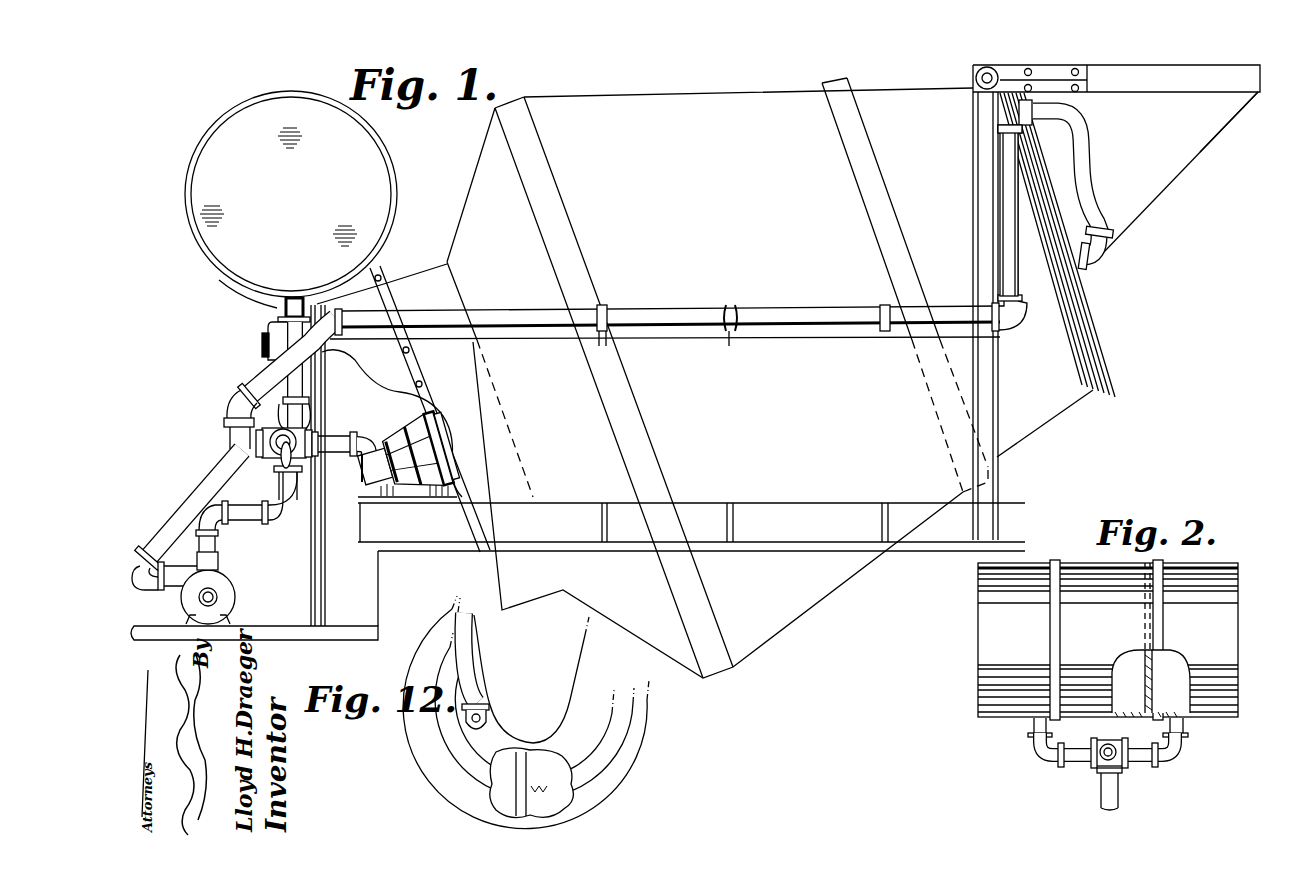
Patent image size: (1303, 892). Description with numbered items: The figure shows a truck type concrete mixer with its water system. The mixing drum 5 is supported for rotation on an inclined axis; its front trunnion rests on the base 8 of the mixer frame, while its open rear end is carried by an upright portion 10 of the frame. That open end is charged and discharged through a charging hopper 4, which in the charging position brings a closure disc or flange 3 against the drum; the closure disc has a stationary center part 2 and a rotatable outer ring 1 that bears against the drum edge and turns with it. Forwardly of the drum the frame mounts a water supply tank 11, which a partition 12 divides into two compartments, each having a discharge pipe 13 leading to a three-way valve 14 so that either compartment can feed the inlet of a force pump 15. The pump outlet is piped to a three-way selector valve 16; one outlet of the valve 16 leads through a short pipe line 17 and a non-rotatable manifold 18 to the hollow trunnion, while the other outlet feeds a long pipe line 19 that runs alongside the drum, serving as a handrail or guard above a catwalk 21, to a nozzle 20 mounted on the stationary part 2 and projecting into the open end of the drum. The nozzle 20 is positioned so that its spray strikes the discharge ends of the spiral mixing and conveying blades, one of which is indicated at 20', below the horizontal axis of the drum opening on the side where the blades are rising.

In FIG. 1, the rotatable outer ring 1 is at (1112, 378).
In FIG. 12, the rotatable outer ring 1 is at (614, 770).
In FIG. 1, the stationary center part 2 is at (1098, 310).
In FIG. 12, the stationary center part 2 is at (612, 748).
In FIG. 1, the closure disc or flange 3 is at (1103, 340).
In FIG. 12, the closure disc or flange 3 is at (628, 715).
In FIG. 1, the charging hopper 4 is at (1178, 170).
In FIG. 12, the charging hopper 4 is at (578, 662).
In FIG. 1, the mixing drum 5 is at (702, 94).
In FIG. 1, the base 8 is at (398, 436).
In FIG. 1, the upright portion 10 is at (1010, 468).
In FIG. 1, the water supply tank 11 is at (224, 130).
In FIG. 2, the water supply tank 11 is at (1247, 613).
In FIG. 2, the partition 12 is at (1157, 672).
In FIG. 1, the discharge pipe 13 is at (280, 312).
In FIG. 2, the discharge pipe 13 is at (1033, 745).
In FIG. 1, the three-way valve 14 is at (272, 350).
In FIG. 2, the three-way valve 14 is at (1128, 765).
In FIG. 1, the force pump 15 is at (240, 590).
In FIG. 1, the three-way selector valve 16 is at (256, 446).
In FIG. 1, the short pipe line 17 is at (335, 433).
In FIG. 1, the non-rotatable manifold 18 is at (364, 473).
In FIG. 1, the long pipe line 19 is at (676, 308).
In FIG. 1, the nozzle 20 is at (1095, 190).
In FIG. 12, the nozzle 20 is at (443, 704).
In FIG. 12, the spiral mixing and conveying blade 20' is at (574, 783).
In FIG. 1, the catwalk 21 is at (784, 530).